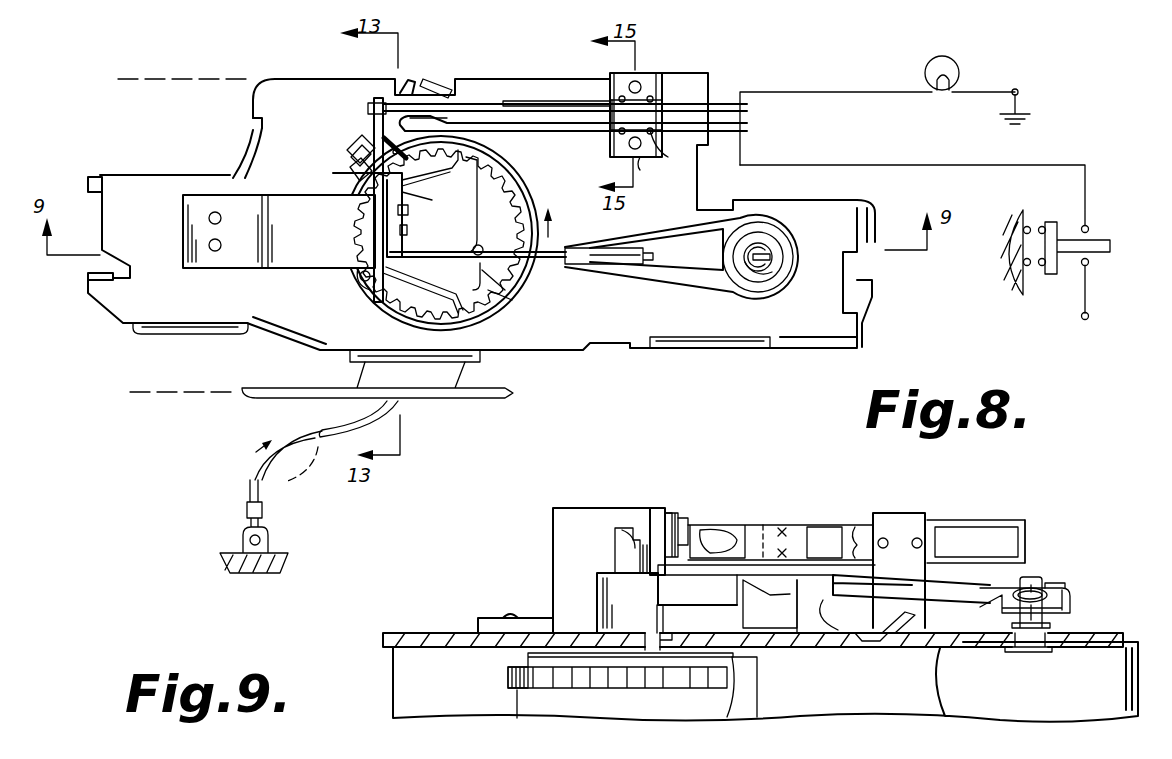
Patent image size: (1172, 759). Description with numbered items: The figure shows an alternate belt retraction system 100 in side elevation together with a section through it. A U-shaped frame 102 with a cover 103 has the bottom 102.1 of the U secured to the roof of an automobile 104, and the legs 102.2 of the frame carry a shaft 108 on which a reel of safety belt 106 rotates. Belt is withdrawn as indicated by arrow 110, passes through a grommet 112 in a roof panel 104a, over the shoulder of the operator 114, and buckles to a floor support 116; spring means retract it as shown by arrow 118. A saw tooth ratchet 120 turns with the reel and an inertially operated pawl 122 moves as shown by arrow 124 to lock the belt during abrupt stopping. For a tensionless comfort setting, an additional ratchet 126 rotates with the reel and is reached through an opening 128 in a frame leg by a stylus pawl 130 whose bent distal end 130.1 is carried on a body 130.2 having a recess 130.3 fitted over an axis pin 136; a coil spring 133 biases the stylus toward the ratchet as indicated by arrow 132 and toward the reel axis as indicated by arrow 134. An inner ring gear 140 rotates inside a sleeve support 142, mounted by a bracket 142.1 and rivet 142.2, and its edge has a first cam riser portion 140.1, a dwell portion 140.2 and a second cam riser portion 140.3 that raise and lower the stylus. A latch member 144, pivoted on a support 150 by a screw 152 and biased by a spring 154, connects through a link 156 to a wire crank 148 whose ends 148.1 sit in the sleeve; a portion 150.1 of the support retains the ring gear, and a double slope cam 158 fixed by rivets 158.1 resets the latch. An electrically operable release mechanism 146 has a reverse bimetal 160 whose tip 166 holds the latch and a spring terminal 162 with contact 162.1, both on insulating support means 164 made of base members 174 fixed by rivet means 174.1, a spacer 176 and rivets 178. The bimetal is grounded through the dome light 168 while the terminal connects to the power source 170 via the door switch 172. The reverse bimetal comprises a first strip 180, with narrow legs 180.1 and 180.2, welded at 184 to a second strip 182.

In FIG. 8, the belt retraction system 100 is at (745, 362).
In FIG. 8, the U-shaped frame 102 is at (823, 323).
In FIG. 8, the bottom of the U-shaped frame 102.1 is at (322, 79).
In FIG. 9, the bottom of the U-shaped frame 102.1 is at (393, 700).
In FIG. 9, the legs of the U-shaped frame 102.2 is at (435, 632).
In FIG. 8, the cover 103 is at (165, 337).
In FIG. 9, the cover 103 is at (885, 710).
In FIG. 8, the automobile 104 is at (183, 78).
In FIG. 8, the vehicle roof panel 104a is at (197, 393).
In FIG. 8, the reel of safety belt 106 is at (350, 432).
In FIG. 9, the reel of safety belt 106 is at (517, 700).
In FIG. 9, the shaft 108 is at (668, 667).
In FIG. 8, the arrow indicating belt withdrawal 110 is at (283, 444).
In FIG. 8, the grommet 112 is at (506, 393).
In FIG. 9, the grommet 112 is at (747, 697).
In FIG. 8, the vehicle operator or passenger 114 is at (283, 481).
In FIG. 8, the support 116 is at (245, 540).
In FIG. 8, the arrow indicating belt retraction 118 is at (331, 428).
In FIG. 8, the saw tooth ratchet 120 is at (240, 155).
In FIG. 9, the saw tooth ratchet 120 is at (508, 678).
In FIG. 8, the inertially operated pawl 122 is at (453, 81).
In FIG. 8, the arrow indicating pawl movement 124 is at (374, 66).
In FIG. 9, the additional ratchet 126 is at (523, 658).
In FIG. 8, the opening 128 is at (398, 269).
In FIG. 9, the opening 128 is at (661, 632).
In FIG. 9, the stylus pawl 130 is at (815, 592).
In FIG. 9, the distal end of the stylus 130.1 is at (648, 653).
In FIG. 8, the stylus body 130.2 is at (610, 270).
In FIG. 9, the stylus body 130.2 is at (957, 590).
In FIG. 8, the recess 130.3 is at (760, 288).
In FIG. 9, the recess 130.3 is at (1062, 586).
In FIG. 9, the arrow indicating stylus bias 132 is at (838, 630).
In FIG. 8, the coil spring 133 is at (780, 268).
In FIG. 9, the coil spring 133 is at (1070, 595).
In FIG. 8, the arrow indicating stylus pivot bias 134 is at (548, 228).
In FIG. 8, the axis pin 136 is at (775, 246).
In FIG. 9, the axis pin 136 is at (1038, 580).
In FIG. 8, the inner ring gear 140 is at (500, 182).
In FIG. 9, the inner ring gear 140 is at (745, 628).
In FIG. 8, the first cam riser portion 140.1 is at (372, 322).
In FIG. 9, the first cam riser portion 140.1 is at (710, 573).
In FIG. 8, the dwell portion 140.2 is at (470, 175).
In FIG. 9, the dwell portion 140.2 is at (790, 594).
In FIG. 8, the second cam riser portion 140.3 is at (352, 198).
In FIG. 8, the sleeve support 142 is at (508, 197).
In FIG. 9, the sleeve support 142 is at (600, 590).
In FIG. 8, the bracket 142.1 is at (496, 295).
In FIG. 8, the rivet 142.2 is at (510, 276).
In FIG. 8, the latch member 144 is at (374, 232).
In FIG. 9, the latch member 144 is at (657, 508).
In FIG. 9, the electrically operable latch release mechanism 146 is at (735, 508).
In FIG. 8, the wire crank member 148 is at (412, 200).
In FIG. 8, the ends of the wire crank 148.1 is at (465, 318).
In FIG. 8, the support 150 is at (218, 270).
In FIG. 9, the portion of the support 150.1 is at (612, 556).
In FIG. 8, the stud or screw 152 is at (406, 220).
In FIG. 9, the stud or screw 152 is at (678, 513).
In FIG. 8, the spring 154 is at (405, 186).
In FIG. 9, the spring 154 is at (672, 500).
In FIG. 8, the link 156 is at (352, 275).
In FIG. 9, the link 156 is at (637, 542).
In FIG. 8, the double slope cam 158 is at (352, 148).
In FIG. 8, the rivets 158.1 is at (360, 172).
In FIG. 8, the reverse bimetal 160 is at (562, 90).
In FIG. 9, the reverse bimetal 160 is at (1030, 521).
In FIG. 8, the spring terminal 162 is at (579, 138).
In FIG. 9, the spring terminal 162 is at (735, 535).
In FIG. 8, the contact 162.1 is at (467, 104).
In FIG. 9, the contact 162.1 is at (712, 525).
In FIG. 8, the electrically insulating support means 164 is at (666, 74).
In FIG. 9, the electrically insulating support means 164 is at (922, 514).
In FIG. 8, the tip 166 is at (370, 106).
In FIG. 8, the automobile dome light 168 is at (962, 66).
In FIG. 8, the automotive power source 170 is at (1092, 317).
In FIG. 8, the door-mounted light switch 172 is at (1090, 262).
In FIG. 8, the base members 174 is at (640, 84).
In FIG. 9, the base members 174 is at (872, 635).
In FIG. 9, the rivet means 174.1 is at (903, 625).
In FIG. 8, the spacer 176 is at (668, 148).
In FIG. 8, the rivets 178 is at (650, 160).
In FIG. 9, the rivets 178 is at (917, 538).
In FIG. 8, the first bimetal strip 180 is at (608, 98).
In FIG. 9, the leg of the first strip 180.1 is at (812, 558).
In FIG. 9, the leg of the first strip 180.2 is at (873, 488).
In FIG. 8, the second bimetal strip 182 is at (505, 102).
In FIG. 9, the second bimetal strip 182 is at (772, 578).
In FIG. 9, the weld 184 is at (790, 521).